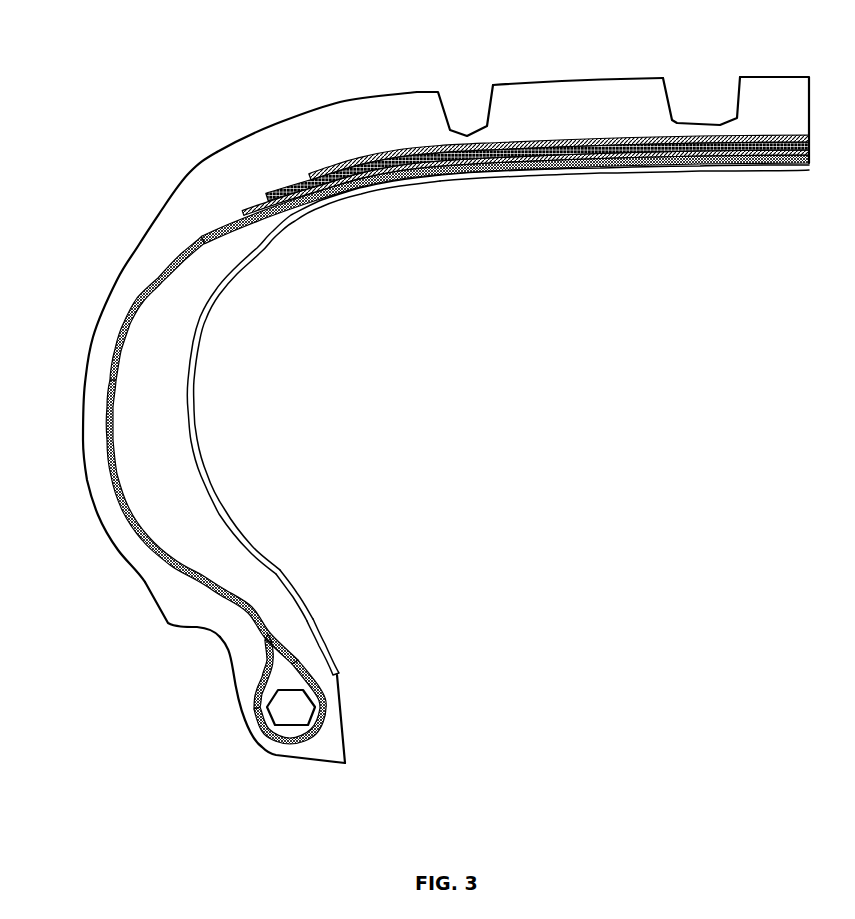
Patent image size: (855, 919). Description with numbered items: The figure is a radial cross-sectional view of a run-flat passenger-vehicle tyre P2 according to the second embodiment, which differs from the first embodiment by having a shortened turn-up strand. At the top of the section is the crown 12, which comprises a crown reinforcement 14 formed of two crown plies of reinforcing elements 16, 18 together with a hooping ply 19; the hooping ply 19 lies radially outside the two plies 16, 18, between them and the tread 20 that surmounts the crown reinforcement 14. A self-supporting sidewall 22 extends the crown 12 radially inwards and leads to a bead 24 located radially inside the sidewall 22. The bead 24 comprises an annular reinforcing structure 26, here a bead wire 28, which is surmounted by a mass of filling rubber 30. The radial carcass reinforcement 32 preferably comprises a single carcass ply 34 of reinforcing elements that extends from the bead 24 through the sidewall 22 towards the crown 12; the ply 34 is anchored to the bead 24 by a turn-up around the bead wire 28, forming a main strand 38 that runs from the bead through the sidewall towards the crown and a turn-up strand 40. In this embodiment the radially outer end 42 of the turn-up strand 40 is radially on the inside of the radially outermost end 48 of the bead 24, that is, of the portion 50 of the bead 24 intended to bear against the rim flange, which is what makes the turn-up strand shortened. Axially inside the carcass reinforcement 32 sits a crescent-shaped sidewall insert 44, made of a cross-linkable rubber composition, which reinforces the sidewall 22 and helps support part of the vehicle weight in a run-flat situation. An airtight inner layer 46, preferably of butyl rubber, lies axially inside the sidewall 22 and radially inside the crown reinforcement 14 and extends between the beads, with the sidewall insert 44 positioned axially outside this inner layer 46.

The tyre P2 is at (200, 106).
The tread 20 is at (386, 93).
The crown 12 is at (567, 107).
The crown reinforcement 14 is at (650, 110).
The hooping ply 19 is at (310, 173).
The crown ply of reinforcing elements 16 is at (247, 203).
The crown ply of reinforcing elements 18 is at (217, 213).
The radial carcass reinforcement 32 is at (146, 266).
The carcass ply 34 is at (110, 383).
The self-supporting sidewall 22 is at (113, 340).
The sidewall insert 44 is at (172, 373).
The airtight inner layer 46 is at (571, 173).
The mass of filling rubber 30 is at (286, 665).
The radially outermost end of the bead 48 is at (155, 622).
The radially outer end of the turn-up strand 42 is at (262, 638).
The main strand 38 is at (312, 662).
The turn-up strand 40 is at (267, 683).
The bead 24 is at (337, 720).
The portion of the bead intended to bear against the rim flange 50 is at (200, 715).
The bead wire 28 is at (283, 713).
The annular reinforcing structure 26 is at (329, 738).